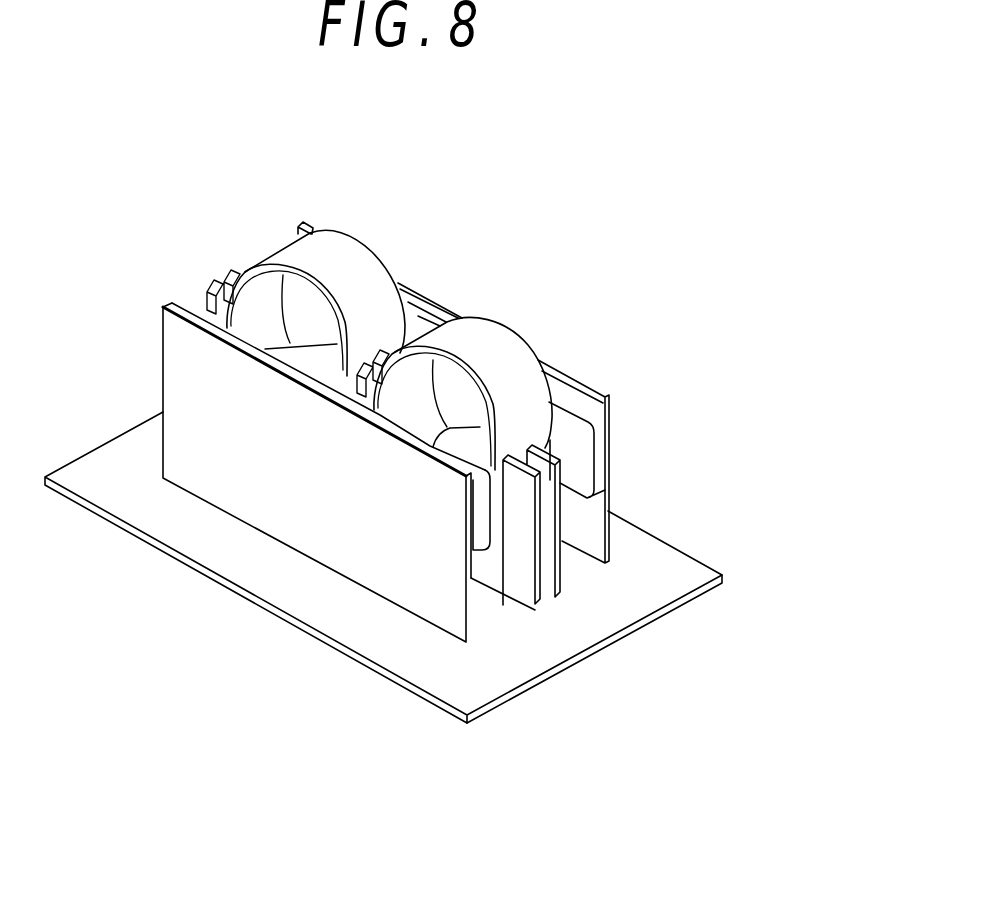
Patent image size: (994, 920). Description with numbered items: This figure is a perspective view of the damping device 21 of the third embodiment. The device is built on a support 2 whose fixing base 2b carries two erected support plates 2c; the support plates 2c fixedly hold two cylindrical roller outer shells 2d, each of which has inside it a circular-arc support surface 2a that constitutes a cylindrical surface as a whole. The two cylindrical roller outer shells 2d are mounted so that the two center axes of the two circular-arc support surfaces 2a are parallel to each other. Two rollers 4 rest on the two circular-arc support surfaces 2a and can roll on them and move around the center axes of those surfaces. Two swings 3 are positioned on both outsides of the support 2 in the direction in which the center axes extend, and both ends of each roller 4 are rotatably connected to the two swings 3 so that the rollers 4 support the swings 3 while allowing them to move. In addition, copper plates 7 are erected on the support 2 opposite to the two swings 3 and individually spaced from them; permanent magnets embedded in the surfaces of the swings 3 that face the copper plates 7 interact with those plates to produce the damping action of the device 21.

The support 2 is at (677, 622).
The circular-arc support surface 2a is at (268, 321).
The fixing base 2b is at (614, 640).
The support plate 2c is at (575, 567).
The cylindrical roller outer shell 2d is at (345, 257).
The swing 3 is at (601, 440).
The roller 4 is at (271, 348).
The copper plate 7 is at (612, 526).
The damping device 21 is at (410, 478).